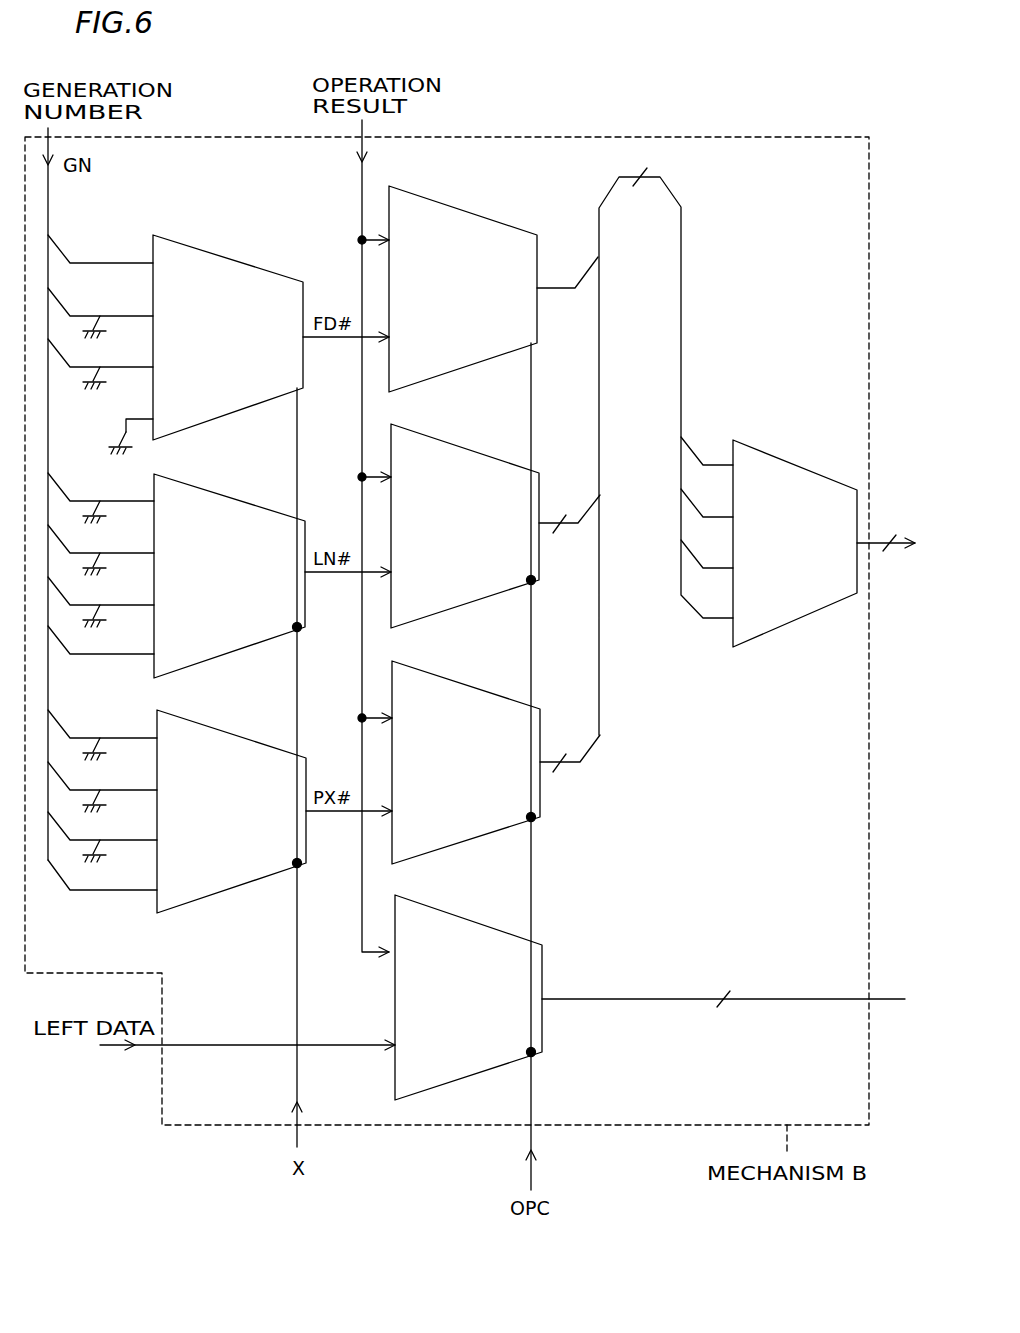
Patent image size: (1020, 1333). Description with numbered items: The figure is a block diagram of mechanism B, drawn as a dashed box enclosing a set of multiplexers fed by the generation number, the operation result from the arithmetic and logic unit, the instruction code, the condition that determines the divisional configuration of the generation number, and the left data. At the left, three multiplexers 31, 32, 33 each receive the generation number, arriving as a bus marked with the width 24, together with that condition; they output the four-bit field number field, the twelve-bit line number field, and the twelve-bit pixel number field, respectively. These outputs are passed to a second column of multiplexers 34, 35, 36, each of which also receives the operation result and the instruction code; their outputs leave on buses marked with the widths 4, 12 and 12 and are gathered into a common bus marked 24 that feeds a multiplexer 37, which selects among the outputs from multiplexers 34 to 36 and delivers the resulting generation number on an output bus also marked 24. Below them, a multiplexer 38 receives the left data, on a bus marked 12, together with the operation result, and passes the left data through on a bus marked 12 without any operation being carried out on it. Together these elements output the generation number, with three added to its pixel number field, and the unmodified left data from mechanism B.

The multiplexer 31 is at (250, 264).
The multiplexer 32 is at (254, 502).
The multiplexer 33 is at (256, 737).
The multiplexer 34 is at (484, 214).
The multiplexer 35 is at (486, 452).
The multiplexer 36 is at (486, 690).
The multiplexer 37 is at (810, 467).
The multiplexer 38 is at (488, 924).
The 24-bit bus 24 is at (42, 205).
The 12-bit bus 12 is at (208, 1037).
The 4-bit bus 4 is at (568, 280).